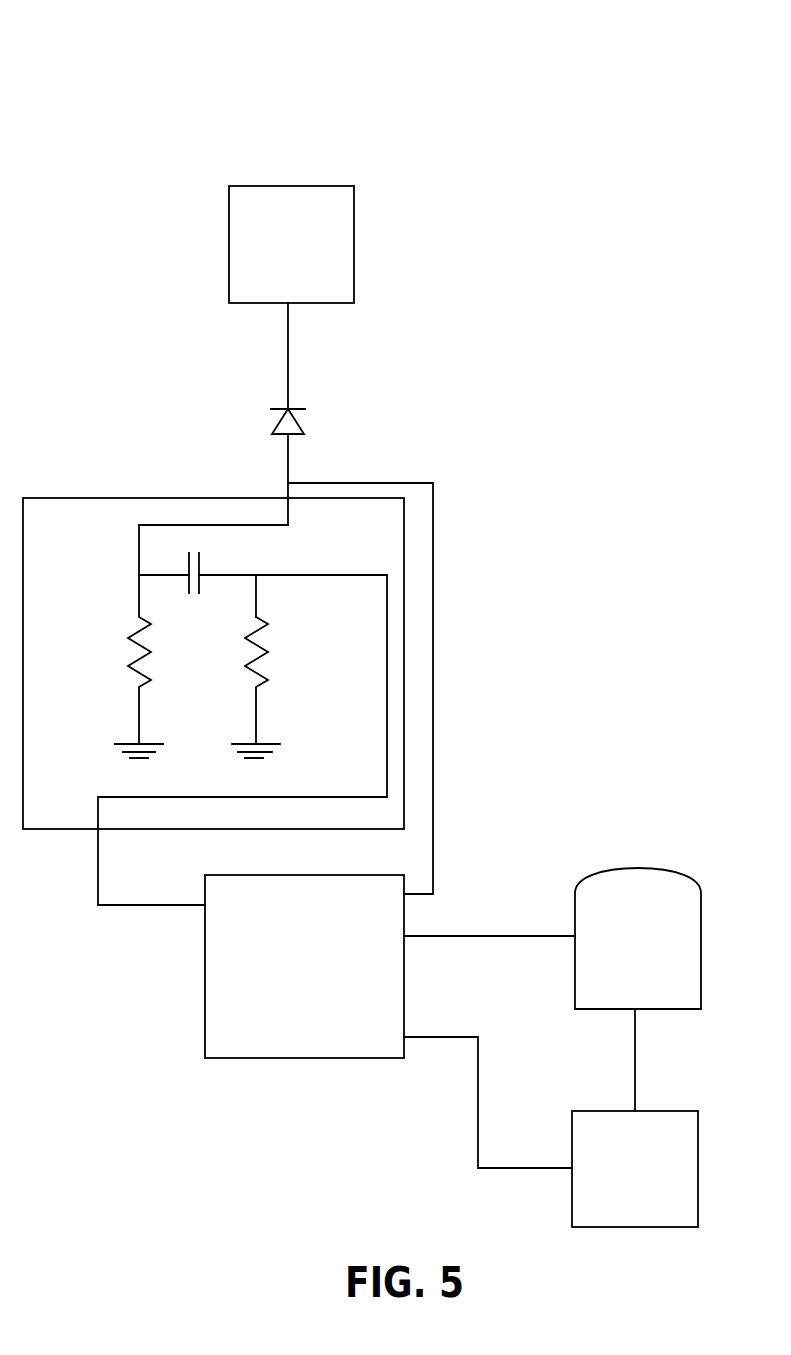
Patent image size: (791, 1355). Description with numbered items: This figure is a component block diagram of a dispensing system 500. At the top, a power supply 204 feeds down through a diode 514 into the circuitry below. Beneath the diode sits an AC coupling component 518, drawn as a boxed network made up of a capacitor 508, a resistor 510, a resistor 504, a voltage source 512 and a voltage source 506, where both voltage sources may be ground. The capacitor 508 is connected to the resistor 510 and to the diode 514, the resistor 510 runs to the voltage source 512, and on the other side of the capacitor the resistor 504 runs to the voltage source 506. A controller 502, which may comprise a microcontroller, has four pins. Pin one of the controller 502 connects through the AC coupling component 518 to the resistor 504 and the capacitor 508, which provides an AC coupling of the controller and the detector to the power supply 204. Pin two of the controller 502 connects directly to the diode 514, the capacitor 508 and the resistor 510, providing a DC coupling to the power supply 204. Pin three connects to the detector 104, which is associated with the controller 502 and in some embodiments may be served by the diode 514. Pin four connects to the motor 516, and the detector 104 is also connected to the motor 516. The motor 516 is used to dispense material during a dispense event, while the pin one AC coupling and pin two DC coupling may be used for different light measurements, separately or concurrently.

The dispensing system 500 is at (146, 42).
The power supply 204 is at (315, 186).
The diode 514 is at (289, 409).
The AC coupling component 518 is at (90, 498).
The capacitor 508 is at (200, 576).
The resistor 510 is at (131, 633).
The resistor 504 is at (251, 634).
The voltage source 512 is at (160, 744).
The voltage source 506 is at (276, 744).
The controller 502 is at (292, 875).
The detector 104 is at (588, 875).
The motor 516 is at (587, 1110).